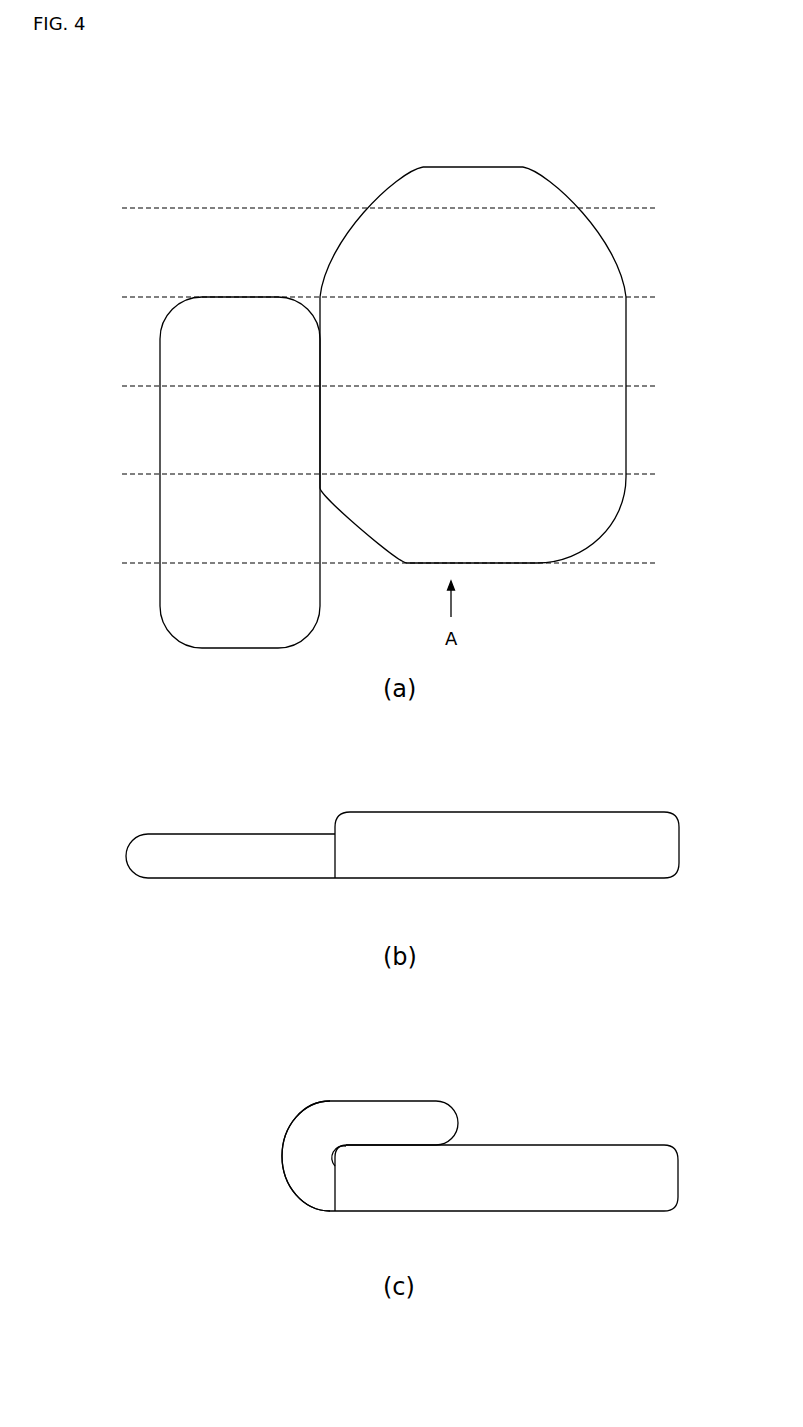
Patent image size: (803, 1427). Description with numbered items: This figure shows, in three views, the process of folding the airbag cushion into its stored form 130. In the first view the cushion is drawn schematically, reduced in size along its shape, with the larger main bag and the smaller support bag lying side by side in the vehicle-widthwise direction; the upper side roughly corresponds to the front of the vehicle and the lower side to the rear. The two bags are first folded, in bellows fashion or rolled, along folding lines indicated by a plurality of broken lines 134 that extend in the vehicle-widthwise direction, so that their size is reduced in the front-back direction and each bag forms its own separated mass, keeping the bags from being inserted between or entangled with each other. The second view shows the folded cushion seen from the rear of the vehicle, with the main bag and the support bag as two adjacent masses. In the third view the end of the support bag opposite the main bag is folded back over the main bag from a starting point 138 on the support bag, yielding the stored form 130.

The stored form 130 is at (284, 1096).
The broken lines 134 is at (411, 567).
The starting point 138 is at (282, 1153).